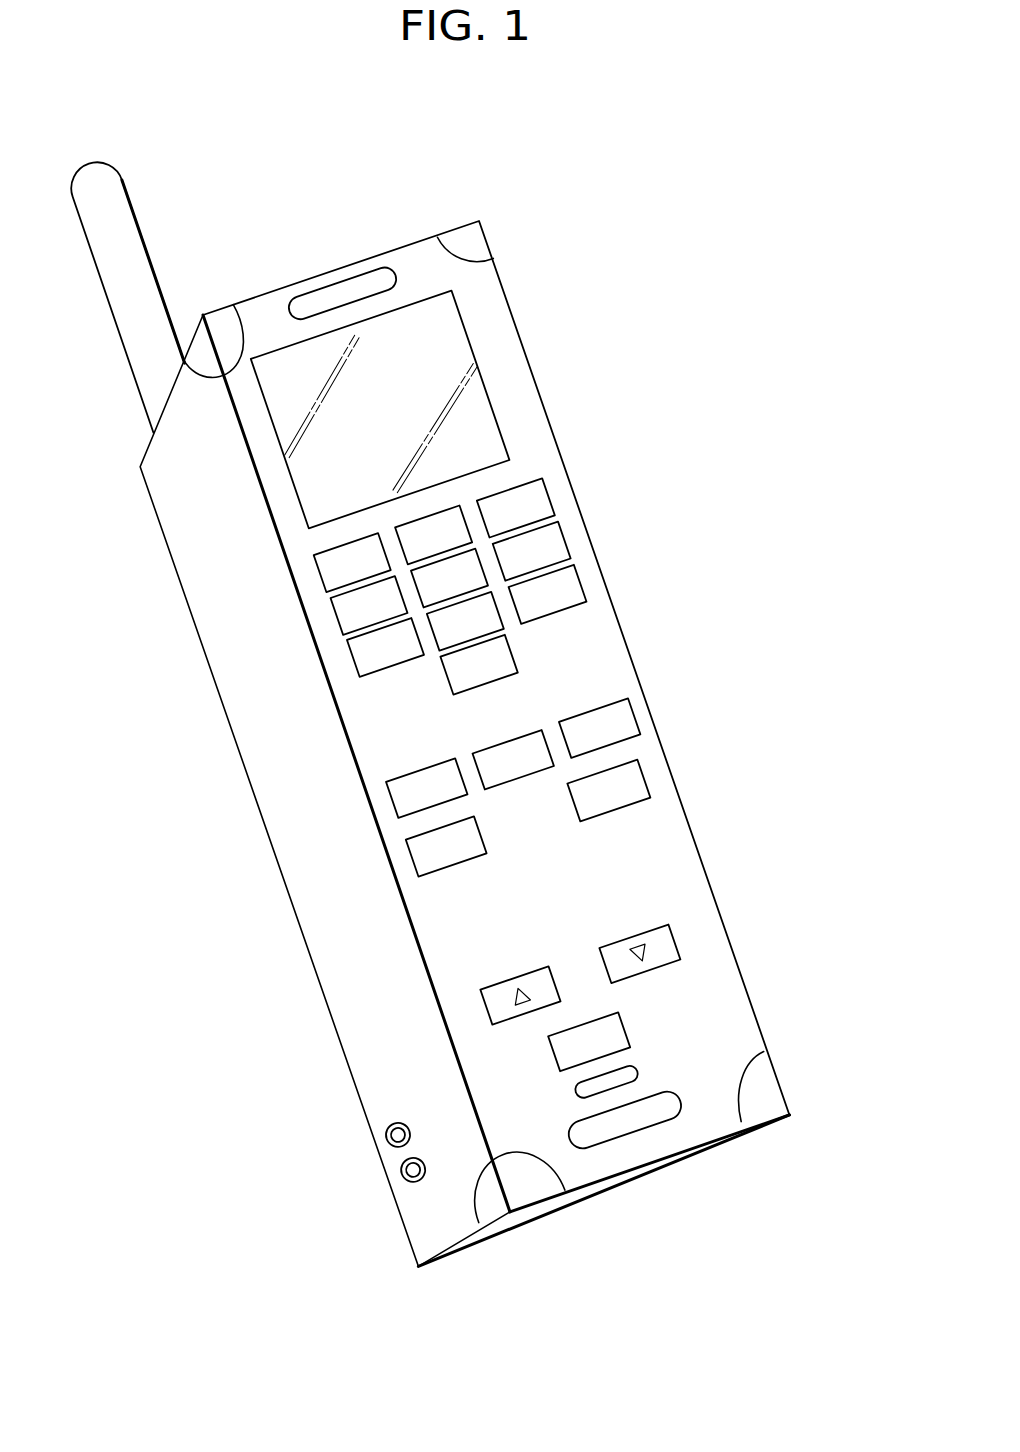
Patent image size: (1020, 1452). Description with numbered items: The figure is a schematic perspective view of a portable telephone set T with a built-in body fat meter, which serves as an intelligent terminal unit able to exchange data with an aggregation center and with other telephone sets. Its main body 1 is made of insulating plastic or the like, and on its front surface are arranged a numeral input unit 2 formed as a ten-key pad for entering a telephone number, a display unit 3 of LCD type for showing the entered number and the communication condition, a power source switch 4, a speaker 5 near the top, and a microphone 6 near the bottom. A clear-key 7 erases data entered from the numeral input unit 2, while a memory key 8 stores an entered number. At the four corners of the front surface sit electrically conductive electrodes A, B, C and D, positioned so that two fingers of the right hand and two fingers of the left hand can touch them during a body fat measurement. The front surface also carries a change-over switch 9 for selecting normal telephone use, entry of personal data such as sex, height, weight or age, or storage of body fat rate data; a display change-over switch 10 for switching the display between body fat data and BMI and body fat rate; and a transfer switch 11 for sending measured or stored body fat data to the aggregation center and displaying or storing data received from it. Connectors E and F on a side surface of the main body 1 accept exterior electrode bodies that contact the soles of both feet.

The main body 1 is at (496, 716).
The numeral input unit 2 is at (570, 524).
The display unit 3 is at (380, 409).
The power source switch 4 is at (627, 1032).
The speaker 5 is at (343, 292).
The microphone 6 is at (622, 1130).
The clear-key 7 is at (413, 860).
The memory key 8 is at (643, 787).
The change-over switch 9 is at (397, 812).
The display change-over switch 10 is at (483, 748).
The transfer switch 11 is at (632, 717).
The portable telephone set T is at (640, 629).
The electrically conductive electrode A is at (224, 333).
The electrically conductive electrode B is at (475, 244).
The electrically conductive electrode C is at (515, 1183).
The electrically conductive electrode D is at (790, 1114).
The connector E is at (395, 1135).
The connector F is at (404, 1174).